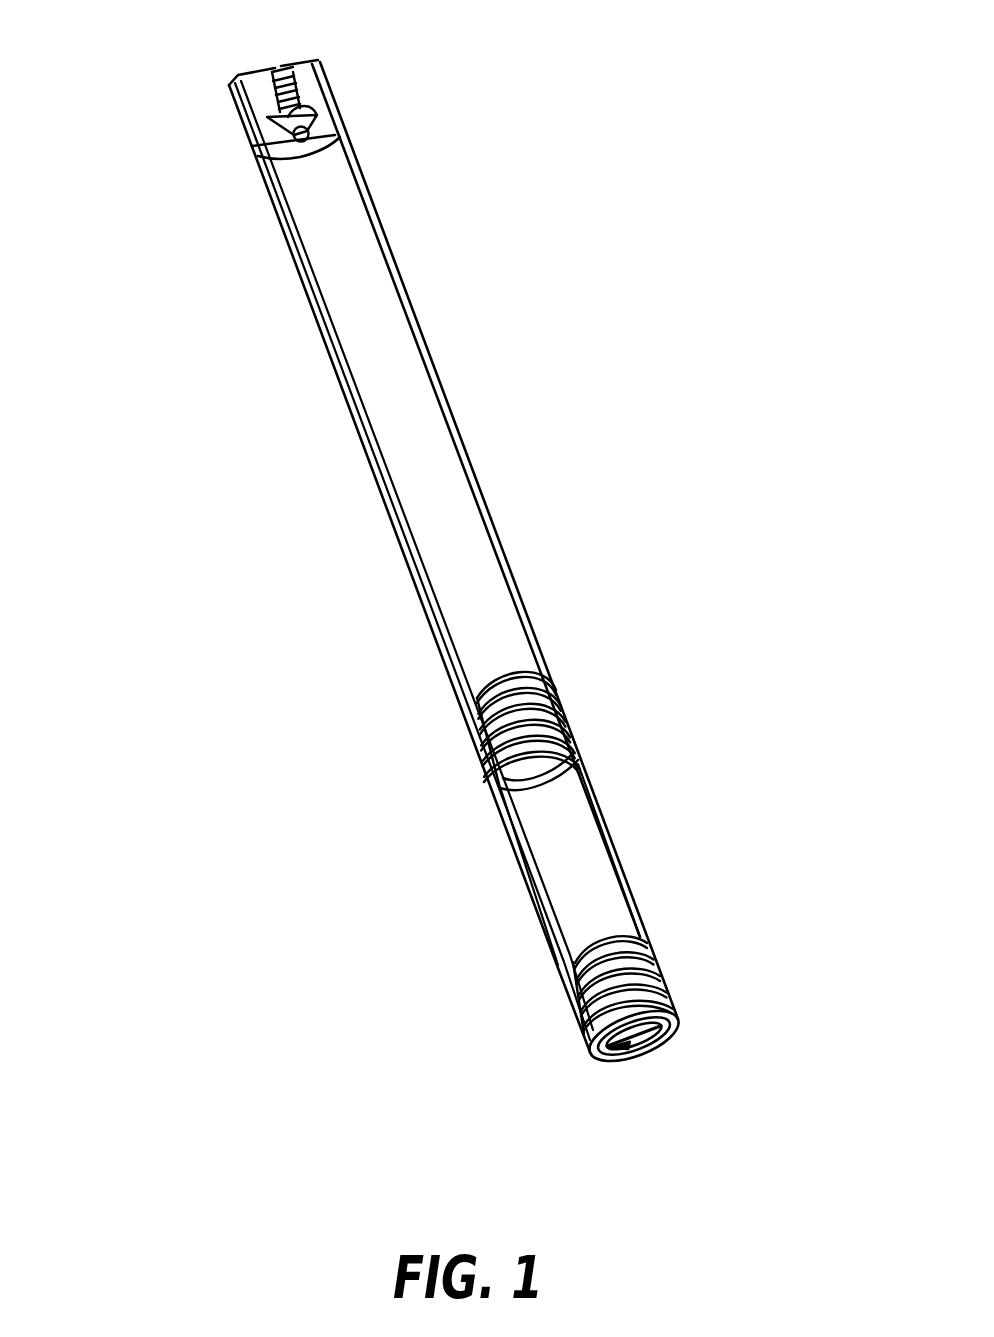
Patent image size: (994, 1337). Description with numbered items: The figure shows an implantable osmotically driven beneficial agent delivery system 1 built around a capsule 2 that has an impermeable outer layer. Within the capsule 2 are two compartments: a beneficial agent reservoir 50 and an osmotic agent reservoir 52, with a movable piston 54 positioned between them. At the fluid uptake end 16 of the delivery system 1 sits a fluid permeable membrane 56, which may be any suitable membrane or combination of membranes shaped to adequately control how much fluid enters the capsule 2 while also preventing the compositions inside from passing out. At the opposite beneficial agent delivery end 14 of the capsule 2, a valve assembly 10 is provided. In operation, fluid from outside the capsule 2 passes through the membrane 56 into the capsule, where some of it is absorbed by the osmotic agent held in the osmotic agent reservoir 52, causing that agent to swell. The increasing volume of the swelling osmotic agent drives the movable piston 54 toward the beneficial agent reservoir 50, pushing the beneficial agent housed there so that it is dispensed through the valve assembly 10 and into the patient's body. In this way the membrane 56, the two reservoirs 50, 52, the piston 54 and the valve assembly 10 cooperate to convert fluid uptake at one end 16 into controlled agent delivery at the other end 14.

The beneficial agent delivery system 1 is at (561, 272).
The capsule 2 is at (500, 553).
The valve assembly 10 is at (255, 88).
The beneficial agent delivery end 14 is at (322, 62).
The fluid uptake end 16 is at (680, 1030).
The beneficial agent reservoir 50 is at (377, 373).
The osmotic agent reservoir 52 is at (565, 878).
The movable piston 54 is at (563, 707).
The fluid permeable membrane 56 is at (568, 995).